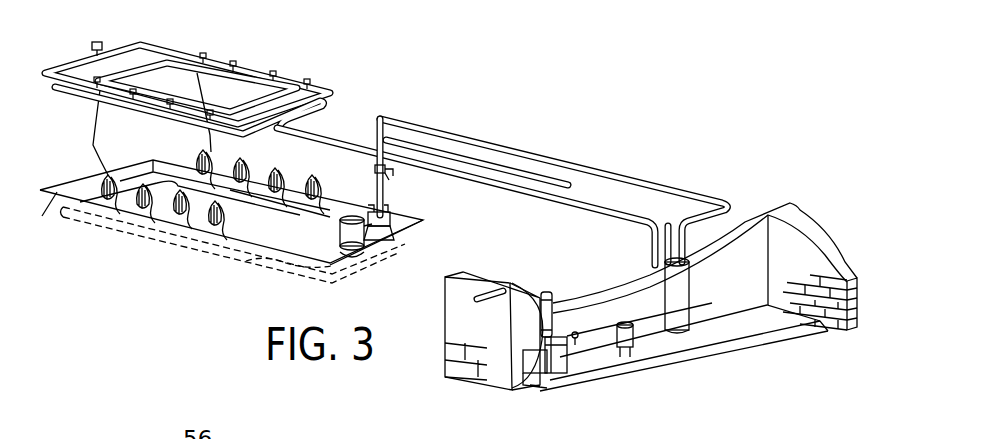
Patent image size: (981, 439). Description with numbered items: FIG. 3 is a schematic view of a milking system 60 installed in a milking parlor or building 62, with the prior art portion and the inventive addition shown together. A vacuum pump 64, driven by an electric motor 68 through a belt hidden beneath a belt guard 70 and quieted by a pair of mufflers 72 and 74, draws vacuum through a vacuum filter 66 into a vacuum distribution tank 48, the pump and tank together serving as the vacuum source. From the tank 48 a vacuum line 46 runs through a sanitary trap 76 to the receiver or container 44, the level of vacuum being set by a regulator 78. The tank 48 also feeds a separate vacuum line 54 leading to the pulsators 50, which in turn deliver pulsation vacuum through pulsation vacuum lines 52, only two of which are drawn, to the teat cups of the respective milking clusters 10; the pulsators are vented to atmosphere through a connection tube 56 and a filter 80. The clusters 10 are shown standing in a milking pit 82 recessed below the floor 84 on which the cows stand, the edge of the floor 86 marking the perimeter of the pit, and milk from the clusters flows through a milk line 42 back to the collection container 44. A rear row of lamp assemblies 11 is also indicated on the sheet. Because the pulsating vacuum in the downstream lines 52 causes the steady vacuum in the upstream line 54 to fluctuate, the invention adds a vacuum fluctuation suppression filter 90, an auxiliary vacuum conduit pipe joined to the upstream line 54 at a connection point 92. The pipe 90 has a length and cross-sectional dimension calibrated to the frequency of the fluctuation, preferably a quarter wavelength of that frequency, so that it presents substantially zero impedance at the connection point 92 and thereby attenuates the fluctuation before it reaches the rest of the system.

The milking cluster 10 is at (142, 207).
The rear row of lamp assemblies 11 is at (276, 169).
The milk line 42 is at (283, 207).
The receiver or container 44 is at (347, 245).
The vacuum line 46 is at (610, 166).
The vacuum distribution tank 48 is at (686, 312).
The pulsator 50 is at (230, 64).
The pulsation vacuum line 52 is at (205, 93).
The vacuum line 54 is at (538, 199).
The connection tube 56 is at (165, 48).
The milking system 60 is at (397, 72).
The milking parlor or building 62 is at (853, 298).
The vacuum pump 64 is at (540, 338).
The vacuum filter 66 is at (633, 343).
The electric motor 68 is at (534, 372).
The belt guard 70 is at (557, 373).
The muffler 72 is at (548, 292).
The muffler 74 is at (500, 289).
The sanitary trap 76 is at (387, 214).
The regulator 78 is at (391, 168).
The filter 80 is at (100, 38).
The milking pit 82 is at (77, 187).
The floor 84 is at (58, 232).
The edge of the floor 86 is at (55, 194).
The vacuum fluctuation suppression filter 90 is at (517, 170).
The connection point 92 is at (333, 115).